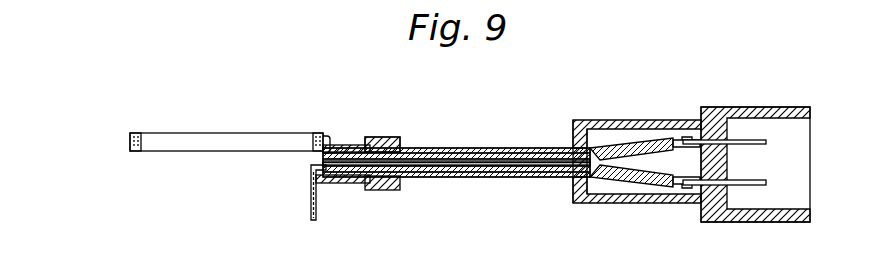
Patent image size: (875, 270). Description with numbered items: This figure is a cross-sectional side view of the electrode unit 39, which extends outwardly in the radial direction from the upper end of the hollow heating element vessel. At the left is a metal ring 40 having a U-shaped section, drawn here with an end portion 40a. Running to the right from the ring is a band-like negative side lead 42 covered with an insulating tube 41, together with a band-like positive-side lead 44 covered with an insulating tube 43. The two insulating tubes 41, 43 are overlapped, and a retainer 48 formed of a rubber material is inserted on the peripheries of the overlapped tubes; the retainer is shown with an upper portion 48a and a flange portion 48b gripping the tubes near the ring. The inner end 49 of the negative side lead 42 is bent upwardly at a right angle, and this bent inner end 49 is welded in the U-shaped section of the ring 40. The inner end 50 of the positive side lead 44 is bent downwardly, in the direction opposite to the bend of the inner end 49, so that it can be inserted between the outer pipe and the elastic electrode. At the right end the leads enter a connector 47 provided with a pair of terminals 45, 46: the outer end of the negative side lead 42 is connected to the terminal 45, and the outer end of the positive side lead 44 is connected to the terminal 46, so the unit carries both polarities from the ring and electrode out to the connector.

The electrode unit 39 is at (511, 148).
The metal ring 40 is at (158, 142).
The rod end cap 40a is at (128, 143).
The insulating tube 41 is at (463, 148).
The negative side lead 42 is at (440, 150).
The insulating tube 43 is at (490, 178).
The positive side lead 44 is at (437, 174).
The terminal 45 is at (768, 142).
The terminal 46 is at (768, 182).
The connector 47 is at (713, 107).
The retainer 48 is at (390, 190).
The ferrule upper portion 48a is at (393, 137).
The ferrule flange 48b is at (337, 143).
The inner end of negative side lead 49 is at (323, 157).
The inner end of positive side lead 50 is at (311, 188).